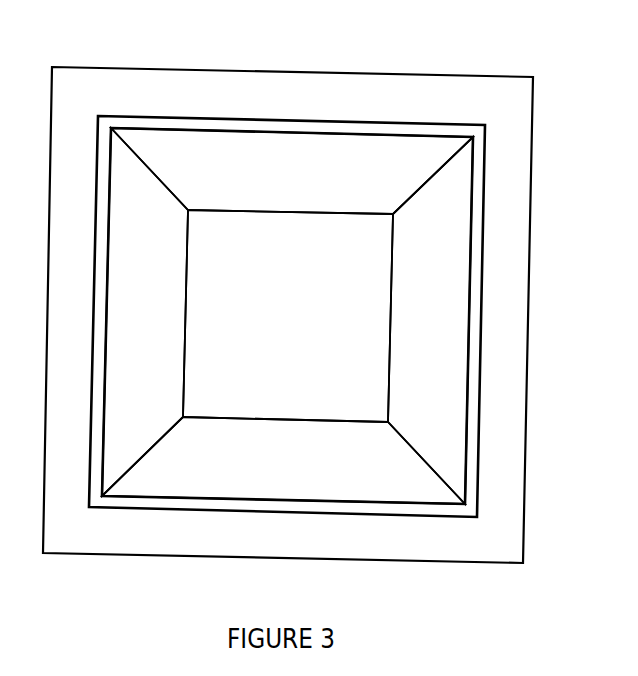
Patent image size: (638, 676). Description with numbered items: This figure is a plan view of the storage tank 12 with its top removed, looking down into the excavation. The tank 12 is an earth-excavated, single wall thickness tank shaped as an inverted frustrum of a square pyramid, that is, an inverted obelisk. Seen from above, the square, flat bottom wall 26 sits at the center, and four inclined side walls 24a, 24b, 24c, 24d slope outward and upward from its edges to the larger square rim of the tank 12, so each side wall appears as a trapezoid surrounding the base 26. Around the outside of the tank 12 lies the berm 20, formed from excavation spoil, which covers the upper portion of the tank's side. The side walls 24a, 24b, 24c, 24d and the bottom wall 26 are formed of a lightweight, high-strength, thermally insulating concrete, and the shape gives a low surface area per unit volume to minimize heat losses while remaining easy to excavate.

The storage tank 12 is at (369, 58).
The berm 20 is at (498, 428).
The side wall 24a is at (168, 313).
The side wall 24b is at (313, 178).
The side wall 24c is at (450, 318).
The side wall 24d is at (308, 467).
The bottom wall 26 is at (303, 313).